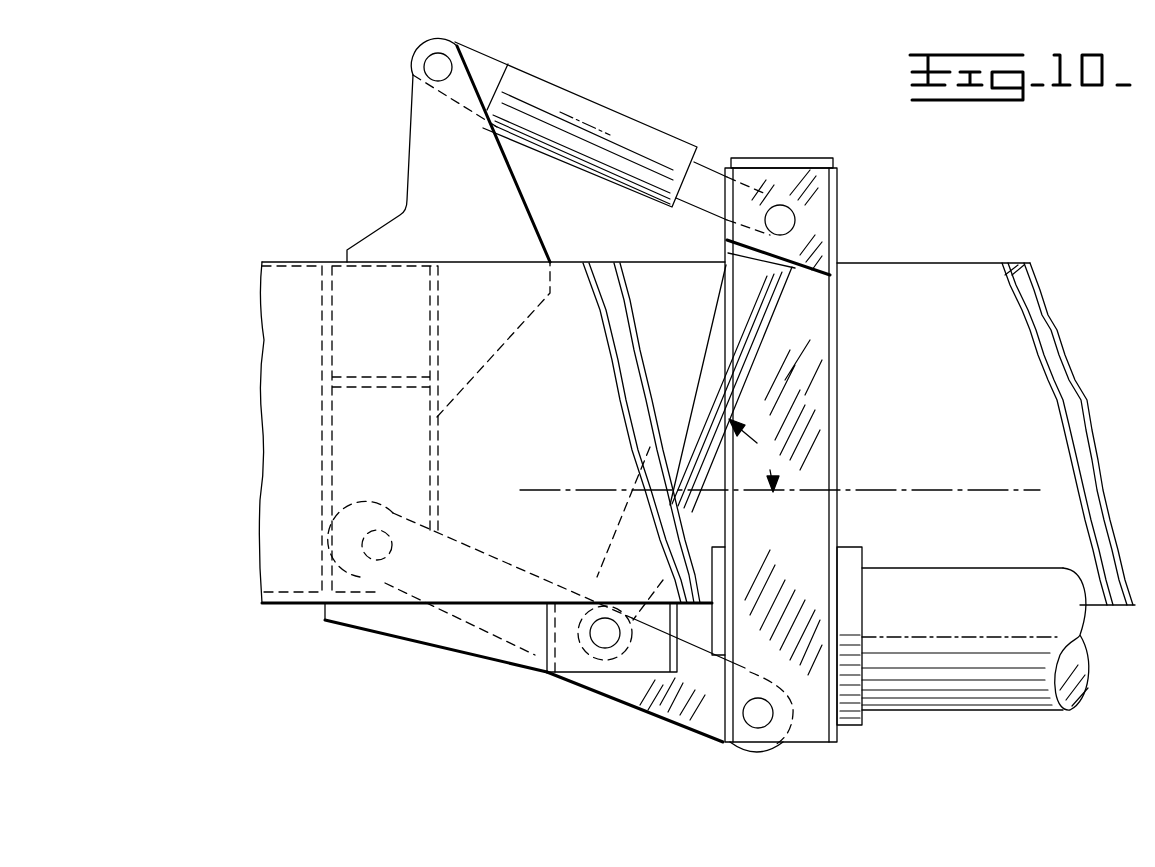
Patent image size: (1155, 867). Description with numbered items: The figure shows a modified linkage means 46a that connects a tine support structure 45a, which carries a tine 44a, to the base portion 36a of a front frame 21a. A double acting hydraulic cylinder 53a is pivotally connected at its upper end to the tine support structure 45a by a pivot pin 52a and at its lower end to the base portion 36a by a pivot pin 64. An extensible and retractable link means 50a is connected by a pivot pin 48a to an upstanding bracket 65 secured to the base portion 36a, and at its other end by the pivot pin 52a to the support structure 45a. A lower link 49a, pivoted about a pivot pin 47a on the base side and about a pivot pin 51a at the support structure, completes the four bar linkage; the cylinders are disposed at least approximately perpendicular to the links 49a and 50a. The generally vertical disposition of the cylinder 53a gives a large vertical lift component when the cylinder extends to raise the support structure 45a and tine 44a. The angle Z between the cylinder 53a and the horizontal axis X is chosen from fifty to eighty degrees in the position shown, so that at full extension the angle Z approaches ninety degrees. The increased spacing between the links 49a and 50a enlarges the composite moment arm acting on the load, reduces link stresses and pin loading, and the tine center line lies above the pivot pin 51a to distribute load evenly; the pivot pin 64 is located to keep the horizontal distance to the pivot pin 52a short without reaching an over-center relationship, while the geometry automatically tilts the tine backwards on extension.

The front frame 21a is at (966, 263).
The base portion 36a is at (278, 465).
The tine 44a is at (955, 585).
The tine support structure 45a is at (818, 337).
The linkage means 46a is at (650, 112).
The pivot pin 47a is at (398, 483).
The pivot pin 48a is at (433, 62).
The link 49a is at (698, 717).
The extensible and retractable link means 50a is at (620, 60).
The pivot pin 51a is at (762, 722).
The pivot pin 52a is at (785, 222).
The double acting hydraulic cylinder 53a is at (720, 328).
The pivot pin 64 is at (603, 640).
The upstanding bracket 65 is at (422, 153).
The horizontal axis X is at (970, 490).
The angle Z is at (754, 455).